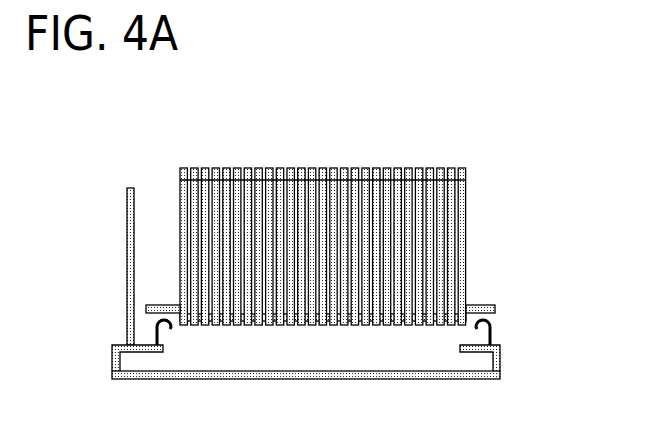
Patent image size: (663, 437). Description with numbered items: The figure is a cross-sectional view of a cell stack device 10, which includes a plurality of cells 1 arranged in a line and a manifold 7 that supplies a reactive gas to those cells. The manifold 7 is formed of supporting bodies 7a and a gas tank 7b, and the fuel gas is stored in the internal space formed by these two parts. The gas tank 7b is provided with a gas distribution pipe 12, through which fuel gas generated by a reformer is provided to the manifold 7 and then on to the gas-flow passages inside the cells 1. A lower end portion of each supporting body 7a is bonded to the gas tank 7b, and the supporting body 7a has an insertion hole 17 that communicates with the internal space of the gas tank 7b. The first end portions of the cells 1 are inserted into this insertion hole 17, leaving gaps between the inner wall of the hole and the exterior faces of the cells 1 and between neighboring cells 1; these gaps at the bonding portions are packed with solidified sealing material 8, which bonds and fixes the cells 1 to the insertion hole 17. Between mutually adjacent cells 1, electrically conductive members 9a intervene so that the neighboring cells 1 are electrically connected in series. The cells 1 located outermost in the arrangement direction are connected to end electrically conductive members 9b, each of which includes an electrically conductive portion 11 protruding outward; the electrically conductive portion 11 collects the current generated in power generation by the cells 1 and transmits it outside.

The cell 1 is at (363, 180).
The manifold 7 is at (363, 367).
The supporting body 7a is at (492, 332).
The gas tank 7b is at (341, 385).
The sealing material 8 is at (173, 328).
The electrically conductive member 9a is at (273, 185).
The end electrically conductive member 9b is at (180, 198).
The cell stack device 10 is at (328, 248).
The electrically conductive portion 11 is at (146, 309).
The gas distribution pipe 12 is at (127, 228).
The insertion hole 17 is at (477, 324).